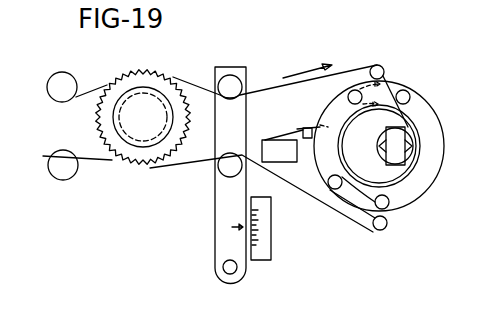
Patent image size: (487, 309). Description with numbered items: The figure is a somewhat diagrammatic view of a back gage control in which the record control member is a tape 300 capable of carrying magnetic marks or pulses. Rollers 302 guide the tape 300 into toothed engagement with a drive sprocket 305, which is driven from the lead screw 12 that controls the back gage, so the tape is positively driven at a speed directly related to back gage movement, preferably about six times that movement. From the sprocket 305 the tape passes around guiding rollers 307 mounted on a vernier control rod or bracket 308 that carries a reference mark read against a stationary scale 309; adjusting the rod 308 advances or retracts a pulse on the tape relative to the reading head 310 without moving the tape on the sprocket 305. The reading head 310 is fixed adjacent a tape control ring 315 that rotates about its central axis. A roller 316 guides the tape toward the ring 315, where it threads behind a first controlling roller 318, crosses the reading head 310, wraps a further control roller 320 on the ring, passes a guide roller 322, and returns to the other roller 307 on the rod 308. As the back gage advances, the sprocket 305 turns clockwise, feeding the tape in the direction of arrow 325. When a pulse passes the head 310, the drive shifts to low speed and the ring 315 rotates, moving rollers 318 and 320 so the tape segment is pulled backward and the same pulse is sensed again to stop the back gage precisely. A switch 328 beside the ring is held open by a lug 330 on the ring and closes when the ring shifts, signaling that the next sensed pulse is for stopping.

The lead screw 12 is at (152, 141).
The tape 300 is at (98, 158).
The rollers 302 is at (68, 80).
The drive sprocket 305 is at (173, 82).
The guiding rollers 307 is at (236, 84).
The vernier control rod or bracket 308 is at (222, 242).
The stationary scale 309 is at (262, 248).
The reading head 310 is at (395, 160).
The tape control ring 315 is at (432, 110).
The roller 316 is at (372, 66).
The first controlling roller 318 is at (406, 90).
The control roller 320 is at (331, 189).
The guide roller 322 is at (380, 231).
The arrow 325 is at (303, 72).
The switch 328 is at (294, 132).
The lug 330 is at (308, 128).